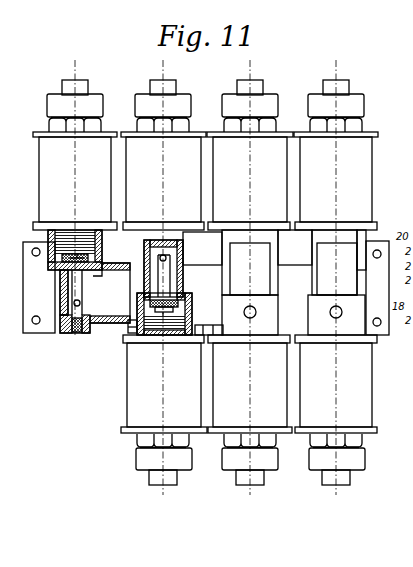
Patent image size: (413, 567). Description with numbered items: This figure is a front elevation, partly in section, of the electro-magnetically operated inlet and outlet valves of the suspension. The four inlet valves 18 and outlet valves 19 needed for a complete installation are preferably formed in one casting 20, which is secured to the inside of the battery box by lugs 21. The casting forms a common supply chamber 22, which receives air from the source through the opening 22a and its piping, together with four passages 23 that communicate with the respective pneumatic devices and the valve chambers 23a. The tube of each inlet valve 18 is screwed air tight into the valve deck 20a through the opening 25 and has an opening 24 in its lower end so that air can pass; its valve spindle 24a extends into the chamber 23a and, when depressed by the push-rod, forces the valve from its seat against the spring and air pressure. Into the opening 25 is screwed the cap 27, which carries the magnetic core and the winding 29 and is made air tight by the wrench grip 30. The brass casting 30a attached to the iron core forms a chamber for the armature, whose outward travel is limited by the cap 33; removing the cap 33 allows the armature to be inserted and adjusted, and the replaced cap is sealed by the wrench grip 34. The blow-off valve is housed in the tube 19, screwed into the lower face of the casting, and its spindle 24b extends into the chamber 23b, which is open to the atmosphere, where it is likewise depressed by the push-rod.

The inlet valve 18 is at (82, 291).
The outlet valve 19 is at (170, 277).
The casting 20 is at (184, 253).
The valve deck 20a is at (94, 268).
The lugs 21 is at (206, 288).
The supply chamber 22 is at (95, 298).
The opening 22a is at (206, 335).
The passages 23 is at (72, 333).
The valve chamber 23a is at (88, 256).
The chamber 23b is at (178, 303).
The opening 24 is at (73, 303).
The valve spindle 24a is at (77, 259).
The valve spindle 24b is at (175, 309).
The opening 25 is at (48, 237).
The cap 27 is at (53, 226).
The winding 29 is at (205, 282).
The wrench grip 30 is at (46, 127).
The brass casting 30a is at (385, 450).
The cap 33 is at (206, 282).
The wrench grip 34 is at (86, 82).